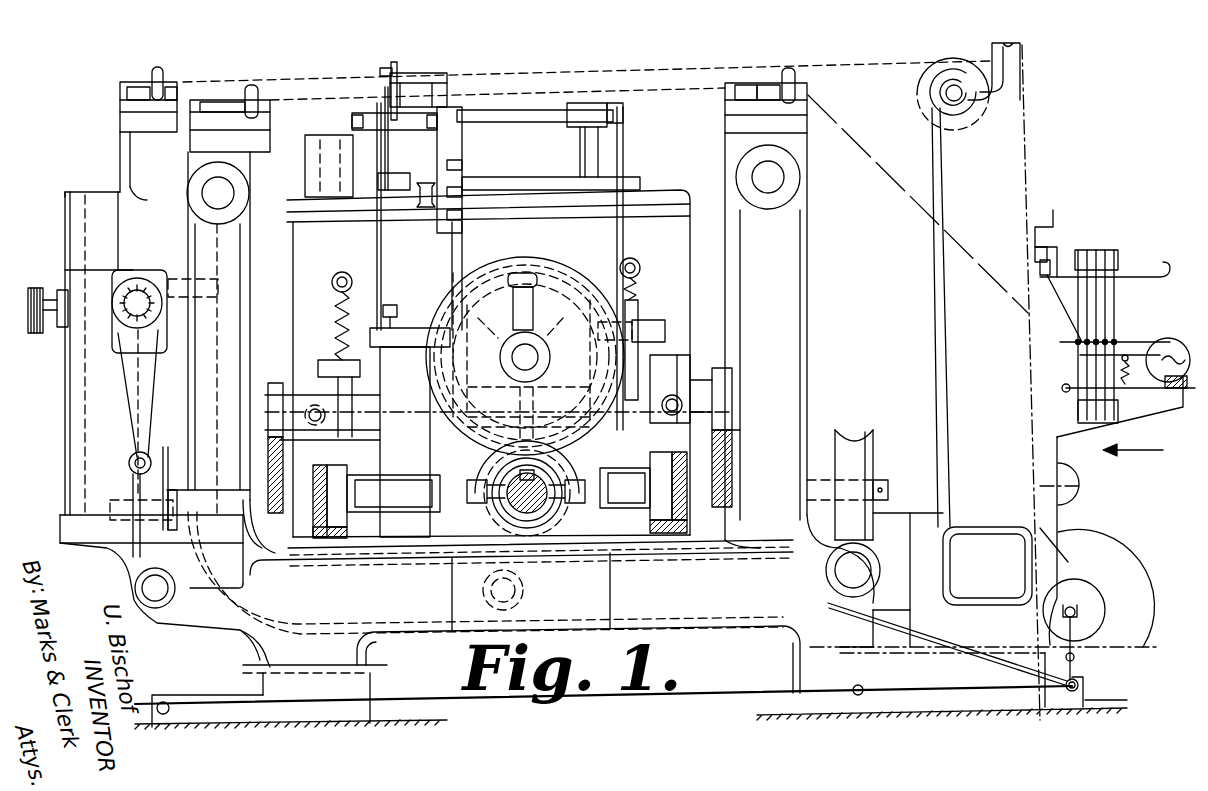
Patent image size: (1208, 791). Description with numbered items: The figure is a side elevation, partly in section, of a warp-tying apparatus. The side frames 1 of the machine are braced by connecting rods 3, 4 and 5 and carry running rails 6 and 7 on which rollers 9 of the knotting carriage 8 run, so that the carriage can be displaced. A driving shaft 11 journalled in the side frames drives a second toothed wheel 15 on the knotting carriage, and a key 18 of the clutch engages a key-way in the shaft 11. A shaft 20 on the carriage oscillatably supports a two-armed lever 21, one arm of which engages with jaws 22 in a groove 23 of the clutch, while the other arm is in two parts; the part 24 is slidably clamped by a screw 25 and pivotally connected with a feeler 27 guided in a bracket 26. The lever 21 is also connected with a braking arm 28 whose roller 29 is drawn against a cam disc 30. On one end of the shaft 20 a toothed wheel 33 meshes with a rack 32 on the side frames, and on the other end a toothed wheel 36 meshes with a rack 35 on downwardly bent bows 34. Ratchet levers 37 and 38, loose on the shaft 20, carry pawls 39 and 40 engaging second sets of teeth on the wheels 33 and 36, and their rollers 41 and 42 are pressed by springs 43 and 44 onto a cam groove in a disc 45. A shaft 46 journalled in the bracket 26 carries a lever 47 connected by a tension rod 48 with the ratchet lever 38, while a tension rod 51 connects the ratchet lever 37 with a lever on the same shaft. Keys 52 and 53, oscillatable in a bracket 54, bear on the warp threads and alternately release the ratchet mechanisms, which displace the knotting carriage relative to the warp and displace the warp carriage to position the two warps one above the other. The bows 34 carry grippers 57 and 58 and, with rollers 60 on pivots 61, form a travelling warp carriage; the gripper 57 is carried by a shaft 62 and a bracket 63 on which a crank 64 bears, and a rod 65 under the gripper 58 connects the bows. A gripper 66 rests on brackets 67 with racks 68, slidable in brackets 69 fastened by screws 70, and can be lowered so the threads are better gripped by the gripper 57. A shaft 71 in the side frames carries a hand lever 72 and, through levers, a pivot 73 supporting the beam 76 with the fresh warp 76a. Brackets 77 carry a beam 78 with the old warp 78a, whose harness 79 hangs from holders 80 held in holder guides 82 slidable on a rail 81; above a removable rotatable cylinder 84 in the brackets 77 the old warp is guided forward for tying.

The side frames 1 is at (1100, 694).
The connecting rod 3 is at (845, 577).
The connecting rod 4 is at (166, 702).
The connecting rod 5 is at (864, 688).
The running rail 6 is at (313, 535).
The running rail 7 is at (687, 527).
The knotting carriage 8 is at (293, 300).
The roller 9 is at (340, 472).
The driving shaft 11 is at (507, 510).
The second toothed wheel 15 is at (560, 268).
The key 18 is at (513, 472).
The shaft 20 is at (415, 410).
The two-armed lever 21 is at (465, 242).
The jaws 22 is at (470, 500).
The groove 23 is at (563, 512).
The part 24 is at (445, 103).
The screw 25 is at (422, 208).
The bracket 26 is at (577, 138).
The feeler 27 is at (398, 75).
The braking arm 28 is at (555, 312).
The roller 29 is at (533, 273).
The cam disc 30 is at (483, 268).
The rack 32 is at (295, 436).
The toothed wheel 33 is at (275, 383).
The downwardly bent bows 34 is at (185, 430).
The rack 35 is at (734, 442).
The toothed wheel 36 is at (723, 368).
The ratchet lever 37 is at (352, 322).
The ratchet lever 38 is at (655, 320).
The pawl 39 is at (330, 360).
The pawl 40 is at (680, 352).
The roller 41 is at (437, 328).
The roller 42 is at (607, 297).
The spring 43 is at (335, 290).
The spring 44 is at (640, 292).
The disc 45 is at (520, 258).
The shaft 46 is at (513, 121).
The lever 47 is at (598, 130).
The tension rod 48 is at (624, 186).
The tension rod 51 is at (377, 241).
The key 52 is at (380, 71).
The key 53 is at (385, 92).
The bracket 54 is at (402, 173).
The gripper 57 is at (270, 118).
The gripper 58 is at (725, 108).
The rollers 60 is at (874, 440).
The pivots 61 is at (888, 483).
The shaft 62 is at (205, 190).
The bracket 63 is at (200, 150).
The crank 64 is at (150, 275).
The rod 65 is at (778, 176).
The gripper 66 is at (168, 95).
The brackets 67 is at (140, 195).
The racks 68 is at (108, 218).
The brackets 69 is at (73, 272).
The screws 70 is at (36, 333).
The shaft 71 is at (1080, 687).
The hand lever 72 is at (888, 617).
The pivot 73 is at (1075, 658).
The beam 76 is at (1100, 593).
The fresh warp 76a is at (958, 245).
The brackets 77 is at (951, 411).
The beam 78 is at (1178, 342).
The old warp 78a is at (847, 63).
The harness 79 is at (1112, 250).
The holders 80 is at (1160, 270).
The rail 81 is at (1046, 285).
The holder guides 82 is at (1053, 221).
The cylinder 84 is at (920, 110).